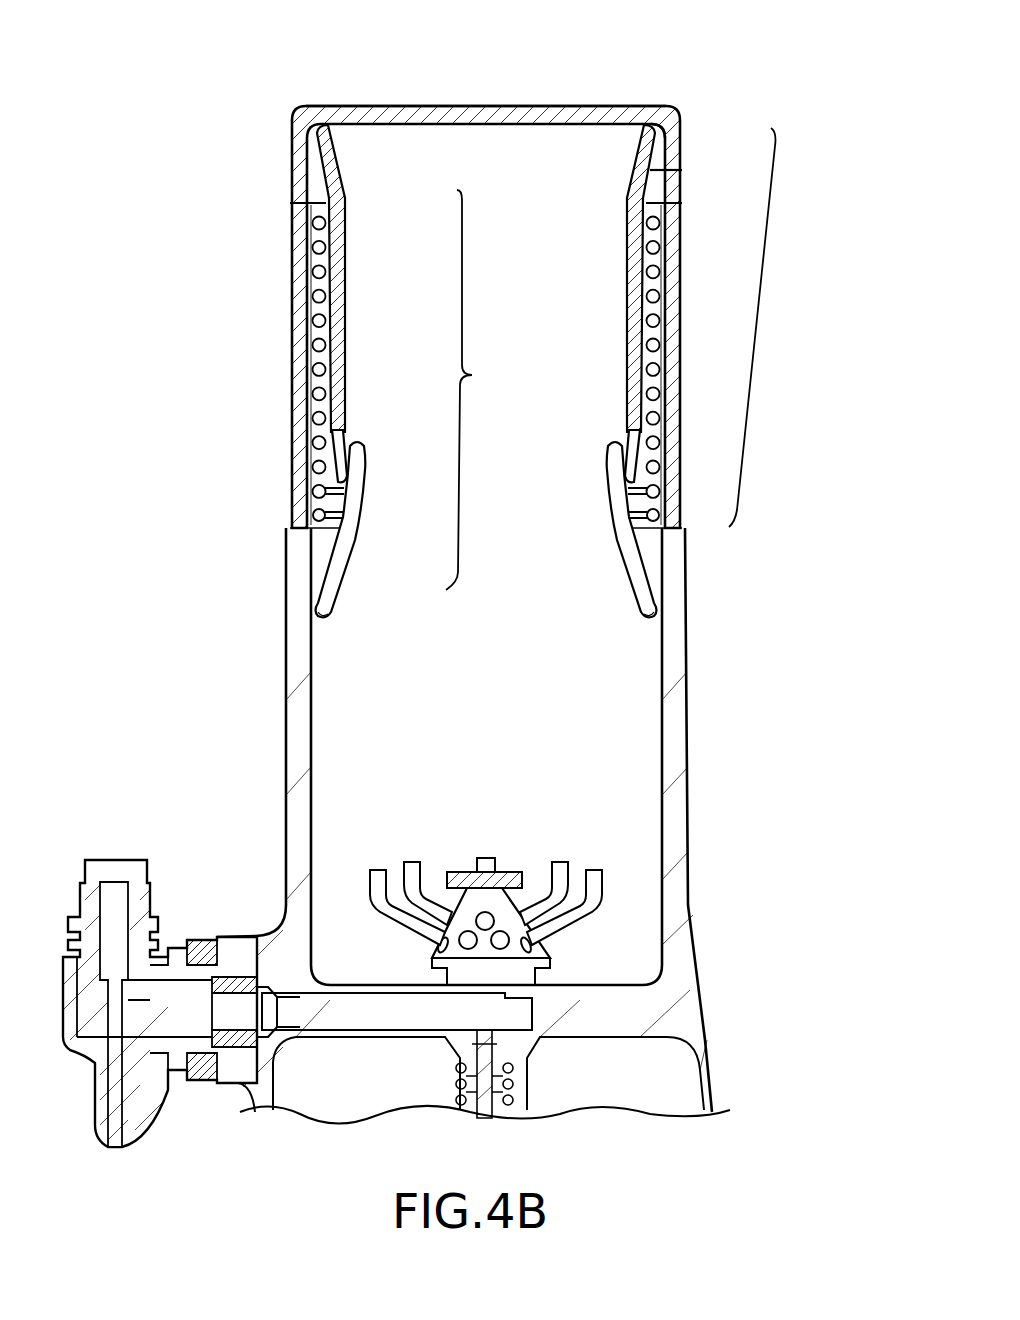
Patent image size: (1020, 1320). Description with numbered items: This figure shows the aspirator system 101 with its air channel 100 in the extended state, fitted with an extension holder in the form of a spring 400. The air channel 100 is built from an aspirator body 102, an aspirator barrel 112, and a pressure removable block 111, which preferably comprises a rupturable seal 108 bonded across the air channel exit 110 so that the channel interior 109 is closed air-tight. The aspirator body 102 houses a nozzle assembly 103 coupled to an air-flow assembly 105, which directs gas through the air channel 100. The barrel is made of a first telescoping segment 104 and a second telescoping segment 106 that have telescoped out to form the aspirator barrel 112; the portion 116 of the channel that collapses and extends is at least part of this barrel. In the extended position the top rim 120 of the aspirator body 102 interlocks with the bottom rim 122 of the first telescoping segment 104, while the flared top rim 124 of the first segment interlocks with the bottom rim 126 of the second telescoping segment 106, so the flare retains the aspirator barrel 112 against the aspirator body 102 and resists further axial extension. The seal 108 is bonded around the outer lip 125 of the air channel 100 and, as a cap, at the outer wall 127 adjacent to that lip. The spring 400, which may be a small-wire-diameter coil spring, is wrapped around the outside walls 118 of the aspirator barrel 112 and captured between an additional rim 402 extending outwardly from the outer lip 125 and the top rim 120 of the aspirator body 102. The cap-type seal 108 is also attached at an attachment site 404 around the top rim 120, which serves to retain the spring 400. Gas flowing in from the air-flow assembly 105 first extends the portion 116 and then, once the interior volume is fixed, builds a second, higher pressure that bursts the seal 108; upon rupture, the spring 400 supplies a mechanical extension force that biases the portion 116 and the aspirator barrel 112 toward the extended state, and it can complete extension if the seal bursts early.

The air channel 100 is at (779, 634).
The aspirator system 101 is at (756, 73).
The aspirator body 102 is at (695, 822).
The nozzle assembly 103 is at (575, 955).
The first telescoping segment 104 is at (353, 554).
The air-flow assembly 105 is at (139, 1160).
The second telescoping segment 106 is at (345, 253).
The seal 108 is at (676, 130).
The channel interior 109 is at (491, 304).
The air channel exit 110 is at (509, 142).
The pressure removable block 111 is at (446, 113).
The aspirator barrel 112 is at (757, 318).
The collapsible and extendable portion 116 is at (480, 390).
The outside walls 118 is at (660, 342).
The top rim 120 is at (290, 546).
The bottom rim 122 is at (330, 614).
The top rim 124 is at (358, 450).
The outer lip 125 is at (660, 170).
The bottom rim 126 is at (330, 490).
The outer wall 127 is at (662, 130).
The spring 400 is at (658, 273).
The additional rim 402 is at (663, 207).
The attachment site 404 is at (300, 528).